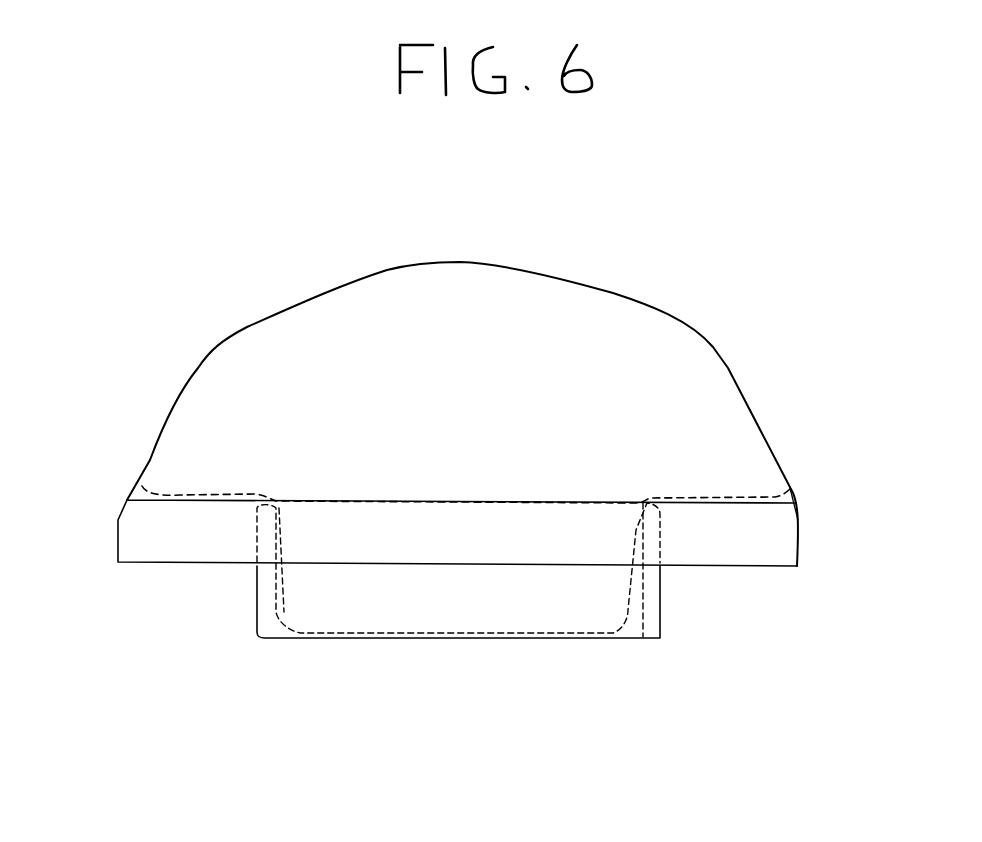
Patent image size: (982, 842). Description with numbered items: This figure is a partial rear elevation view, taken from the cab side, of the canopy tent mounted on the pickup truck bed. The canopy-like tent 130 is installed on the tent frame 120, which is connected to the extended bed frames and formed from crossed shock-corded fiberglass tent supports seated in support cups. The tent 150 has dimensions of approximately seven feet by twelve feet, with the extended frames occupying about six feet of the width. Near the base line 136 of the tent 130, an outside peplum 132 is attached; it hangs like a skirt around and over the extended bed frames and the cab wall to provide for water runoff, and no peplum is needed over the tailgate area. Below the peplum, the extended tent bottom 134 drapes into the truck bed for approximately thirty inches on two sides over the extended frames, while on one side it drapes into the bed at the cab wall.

The tent frame 120 is at (802, 499).
The canopy-like tent 130 is at (612, 292).
The outside peplum 132 is at (118, 538).
The extended tent bottom 134 is at (294, 628).
The base line 136 is at (147, 470).
The tent 150 is at (481, 372).